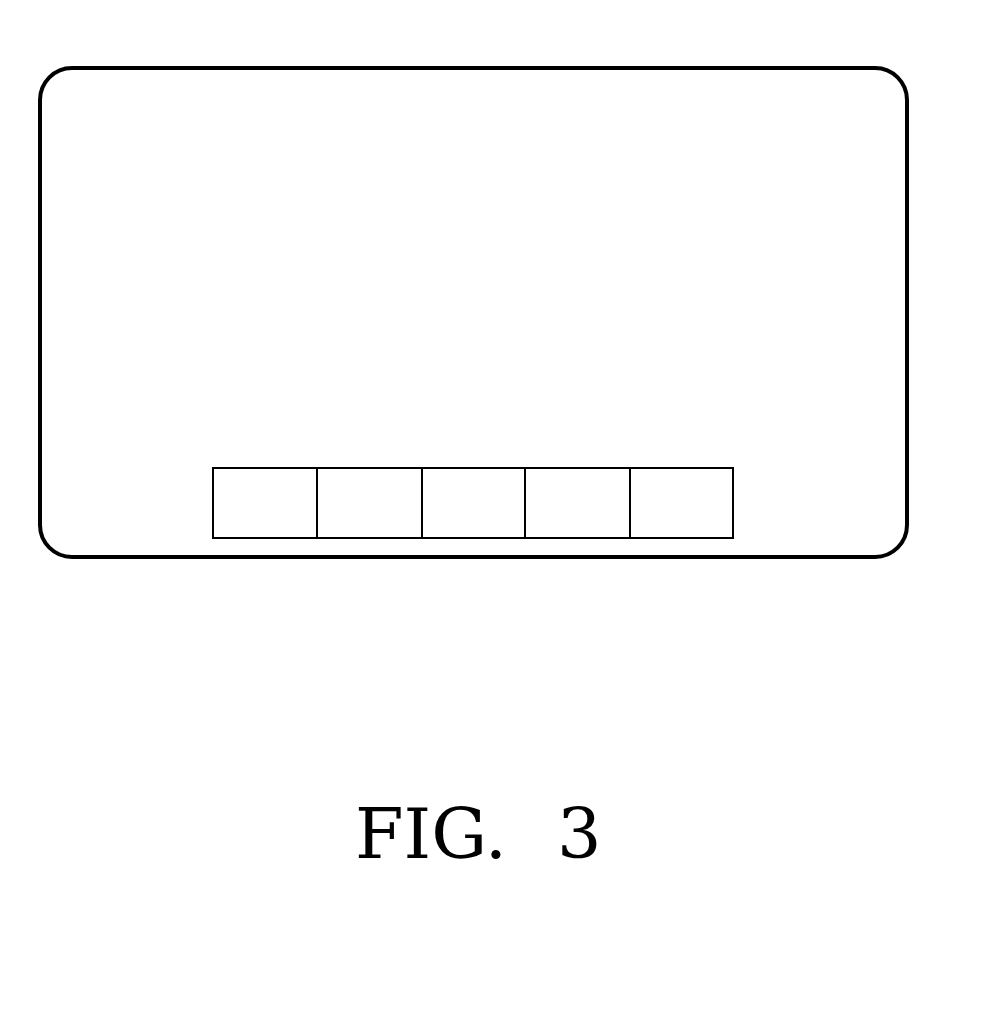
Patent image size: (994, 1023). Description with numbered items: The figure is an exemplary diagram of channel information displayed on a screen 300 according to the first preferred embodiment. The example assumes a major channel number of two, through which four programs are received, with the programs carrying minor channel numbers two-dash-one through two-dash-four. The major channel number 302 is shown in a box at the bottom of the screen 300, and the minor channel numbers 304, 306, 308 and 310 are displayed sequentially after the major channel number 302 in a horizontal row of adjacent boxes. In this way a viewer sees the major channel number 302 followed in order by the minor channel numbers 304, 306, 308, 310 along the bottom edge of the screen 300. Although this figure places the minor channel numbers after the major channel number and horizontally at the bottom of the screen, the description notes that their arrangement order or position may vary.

The screen 300 is at (470, 68).
The major channel number 302 is at (265, 538).
The minor channel number 304 is at (370, 538).
The minor channel number 306 is at (474, 538).
The minor channel number 308 is at (578, 538).
The minor channel number 310 is at (682, 538).